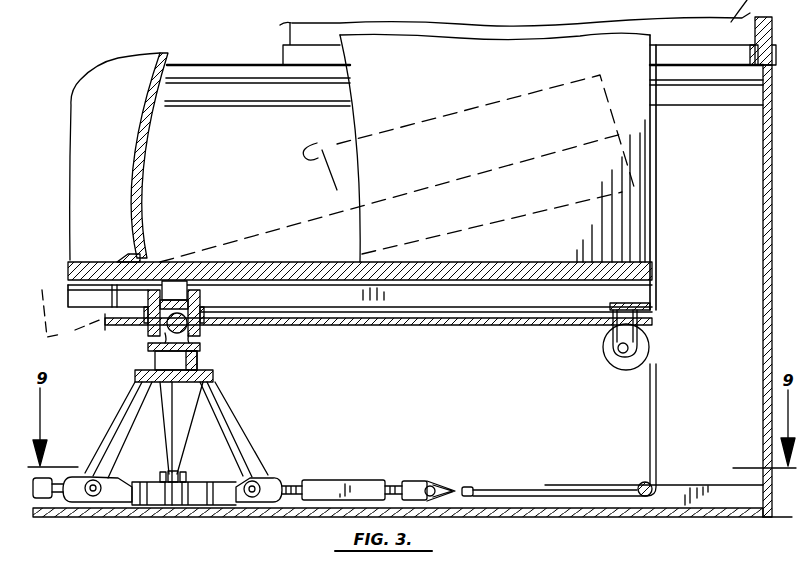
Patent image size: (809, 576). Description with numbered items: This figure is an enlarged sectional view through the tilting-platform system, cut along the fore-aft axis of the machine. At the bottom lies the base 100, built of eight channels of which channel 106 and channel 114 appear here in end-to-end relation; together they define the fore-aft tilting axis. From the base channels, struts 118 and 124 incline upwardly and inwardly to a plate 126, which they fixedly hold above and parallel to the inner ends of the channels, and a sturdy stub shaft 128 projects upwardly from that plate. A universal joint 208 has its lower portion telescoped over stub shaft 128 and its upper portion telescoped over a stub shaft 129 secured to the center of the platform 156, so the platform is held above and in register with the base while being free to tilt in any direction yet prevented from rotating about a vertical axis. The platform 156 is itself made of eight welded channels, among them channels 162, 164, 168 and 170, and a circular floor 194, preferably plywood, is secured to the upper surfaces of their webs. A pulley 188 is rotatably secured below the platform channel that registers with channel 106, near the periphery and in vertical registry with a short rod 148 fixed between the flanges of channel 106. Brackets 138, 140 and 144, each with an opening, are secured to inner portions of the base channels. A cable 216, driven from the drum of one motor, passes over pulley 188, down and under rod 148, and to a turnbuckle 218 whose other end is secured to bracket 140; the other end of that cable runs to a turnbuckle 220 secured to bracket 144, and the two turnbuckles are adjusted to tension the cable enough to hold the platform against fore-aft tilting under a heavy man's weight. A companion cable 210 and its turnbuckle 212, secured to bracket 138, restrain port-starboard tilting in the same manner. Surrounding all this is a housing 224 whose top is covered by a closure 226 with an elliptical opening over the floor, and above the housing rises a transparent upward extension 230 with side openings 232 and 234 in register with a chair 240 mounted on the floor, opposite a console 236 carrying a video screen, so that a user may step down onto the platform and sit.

The base 100 is at (279, 436).
The channel 106 is at (680, 483).
The channel 114 is at (74, 511).
The strut 118 is at (238, 426).
The strut 124 is at (120, 406).
The plate 126 is at (216, 378).
The stub shaft 128 is at (168, 360).
The stub shaft 129 is at (173, 288).
The bracket 138 is at (173, 507).
The bracket 140 is at (238, 507).
The bracket 144 is at (115, 505).
The short rod 148 is at (640, 482).
The platform 156 is at (260, 230).
The channel 162 is at (466, 303).
The channel 164 is at (206, 333).
The channel 168 is at (125, 297).
The channel 170 is at (60, 288).
The pulley 188 is at (613, 366).
The circular floor 194 is at (312, 268).
The universal joint 208 is at (203, 340).
The cable 210 is at (205, 480).
The turnbuckle 212 is at (173, 480).
The cable 216 is at (373, 321).
The turnbuckle 218 is at (365, 476).
The turnbuckle 220 is at (33, 493).
The housing 224 is at (762, 323).
The closure 226 is at (720, 76).
The transparent upward extension 230 is at (142, 0).
The opening 232 is at (281, 22).
The opening 234 is at (240, 0).
The console 236 is at (362, 118).
The chair 240 is at (142, 178).